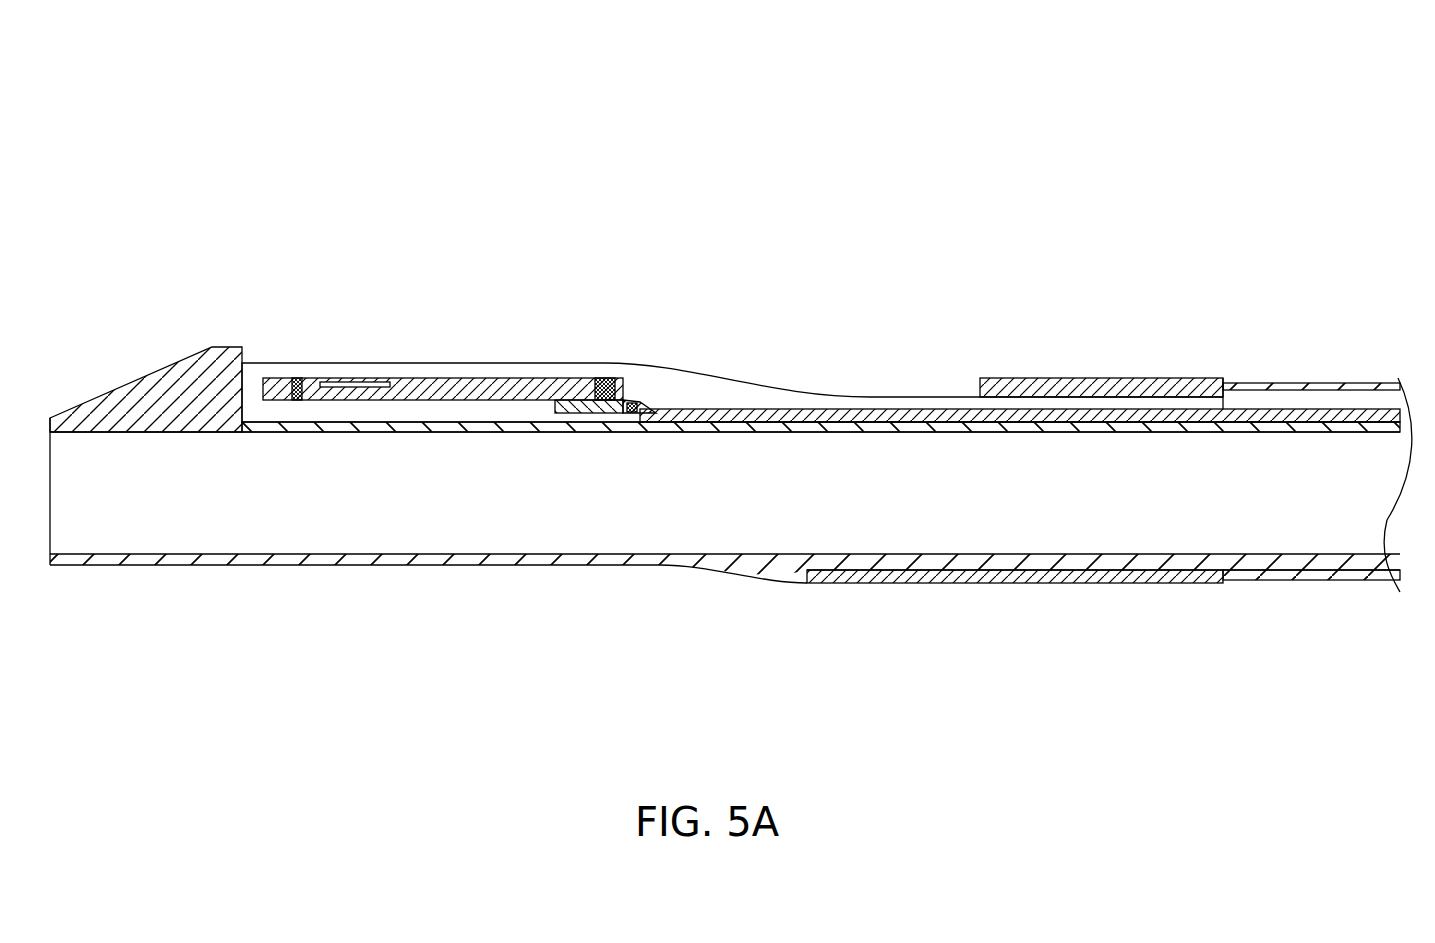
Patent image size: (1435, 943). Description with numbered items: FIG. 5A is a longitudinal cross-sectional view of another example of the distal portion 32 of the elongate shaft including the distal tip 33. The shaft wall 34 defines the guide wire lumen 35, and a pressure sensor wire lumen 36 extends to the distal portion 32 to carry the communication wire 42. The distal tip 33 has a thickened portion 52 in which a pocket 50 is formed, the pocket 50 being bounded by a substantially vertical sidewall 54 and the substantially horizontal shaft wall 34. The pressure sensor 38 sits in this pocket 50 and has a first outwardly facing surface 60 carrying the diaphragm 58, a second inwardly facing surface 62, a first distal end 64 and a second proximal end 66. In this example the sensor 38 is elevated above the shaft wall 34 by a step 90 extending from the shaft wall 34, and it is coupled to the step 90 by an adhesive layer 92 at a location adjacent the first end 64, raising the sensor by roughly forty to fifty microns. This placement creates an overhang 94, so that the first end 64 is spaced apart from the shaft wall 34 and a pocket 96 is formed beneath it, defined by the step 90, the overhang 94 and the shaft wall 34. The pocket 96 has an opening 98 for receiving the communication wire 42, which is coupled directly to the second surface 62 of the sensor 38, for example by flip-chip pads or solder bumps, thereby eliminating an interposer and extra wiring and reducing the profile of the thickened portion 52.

The distal portion 32 is at (976, 712).
The distal tip 33 is at (345, 168).
The shaft wall 34 is at (366, 556).
The guide wire lumen 35 is at (887, 504).
The pressure sensor wire lumen 36 is at (1376, 384).
The pressure sensor 38 is at (462, 376).
The communication wire 42 is at (822, 408).
The pocket 50 is at (445, 360).
The thickened portion 52 is at (735, 378).
The sidewall 54 is at (242, 350).
The diaphragm 58 is at (362, 378).
The first outwardly facing surface 60 is at (492, 378).
The second inwardly facing surface 62 is at (290, 400).
The first distal end 64 is at (600, 378).
The second proximal end 66 is at (293, 378).
The step 90 is at (500, 412).
The adhesive layer 92 is at (495, 408).
The overhang 94 is at (628, 403).
The pocket 96 is at (598, 418).
The opening 98 is at (645, 404).